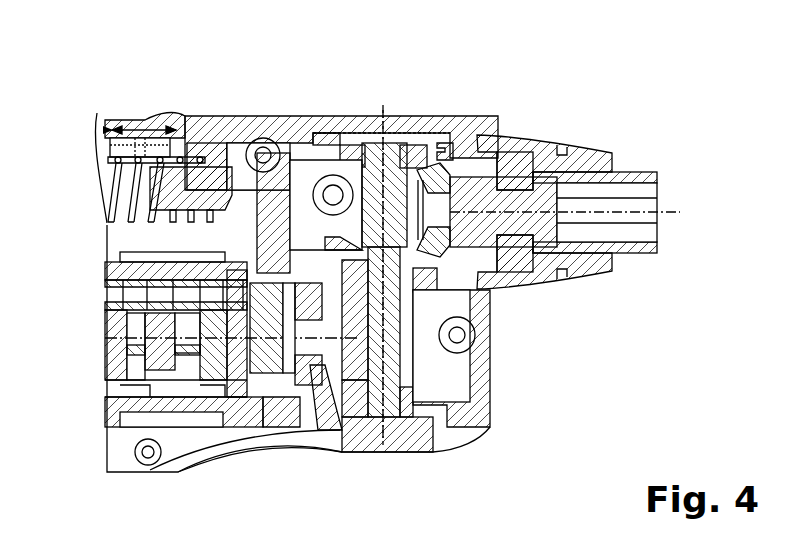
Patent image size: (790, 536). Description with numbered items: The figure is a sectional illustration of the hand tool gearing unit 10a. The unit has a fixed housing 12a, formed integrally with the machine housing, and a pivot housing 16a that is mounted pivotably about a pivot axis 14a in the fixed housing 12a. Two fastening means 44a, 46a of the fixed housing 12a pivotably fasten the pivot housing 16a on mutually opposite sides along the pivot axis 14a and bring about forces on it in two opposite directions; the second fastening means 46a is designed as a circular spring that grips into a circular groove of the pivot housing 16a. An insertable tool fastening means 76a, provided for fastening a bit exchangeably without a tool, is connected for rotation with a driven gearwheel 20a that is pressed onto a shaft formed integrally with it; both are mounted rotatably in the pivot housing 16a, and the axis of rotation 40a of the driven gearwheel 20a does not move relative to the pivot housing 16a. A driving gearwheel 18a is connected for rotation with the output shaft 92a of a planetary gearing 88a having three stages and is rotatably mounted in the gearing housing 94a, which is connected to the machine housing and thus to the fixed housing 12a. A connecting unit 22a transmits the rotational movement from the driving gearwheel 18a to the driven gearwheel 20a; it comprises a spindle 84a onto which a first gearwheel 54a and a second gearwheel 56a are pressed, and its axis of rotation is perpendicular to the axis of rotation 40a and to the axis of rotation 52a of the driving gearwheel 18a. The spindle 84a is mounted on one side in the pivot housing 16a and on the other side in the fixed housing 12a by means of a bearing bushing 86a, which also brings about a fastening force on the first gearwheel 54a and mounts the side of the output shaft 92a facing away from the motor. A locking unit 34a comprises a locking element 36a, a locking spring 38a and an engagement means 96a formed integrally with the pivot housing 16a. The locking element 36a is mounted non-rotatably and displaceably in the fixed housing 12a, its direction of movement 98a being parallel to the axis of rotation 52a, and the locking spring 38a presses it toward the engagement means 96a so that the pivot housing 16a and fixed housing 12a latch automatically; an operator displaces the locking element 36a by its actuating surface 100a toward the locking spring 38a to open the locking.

The hand tool gearing unit 10a is at (502, 92).
The fixed housing 12a is at (288, 128).
The pivot axis 14a is at (385, 115).
The pivot housing 16a is at (540, 145).
The driving gearwheel 18a is at (350, 400).
The driven gearwheel 20a is at (437, 127).
The connecting unit 22a is at (408, 128).
The locking unit 34a is at (158, 90).
The locking element 36a is at (207, 147).
The locking spring 38a is at (102, 175).
The axis of rotation of the driven gearwheel 40a is at (677, 212).
The fastening means 44a is at (460, 128).
The second fastening means 46a is at (440, 280).
The axis of rotation of the driving gearwheel 52a is at (293, 420).
The first gearwheel 54a is at (443, 327).
The second gearwheel 56a is at (462, 330).
The insertable tool fastening means 76a is at (640, 172).
The spindle 84a is at (362, 128).
The bearing bushing 86a is at (432, 440).
The gearing 88a is at (187, 418).
The output shaft 92a is at (313, 400).
The gearing housing 94a is at (145, 407).
The engagement means 96a is at (275, 128).
The direction of movement 98a is at (138, 125).
The actuating surface 100a is at (120, 126).